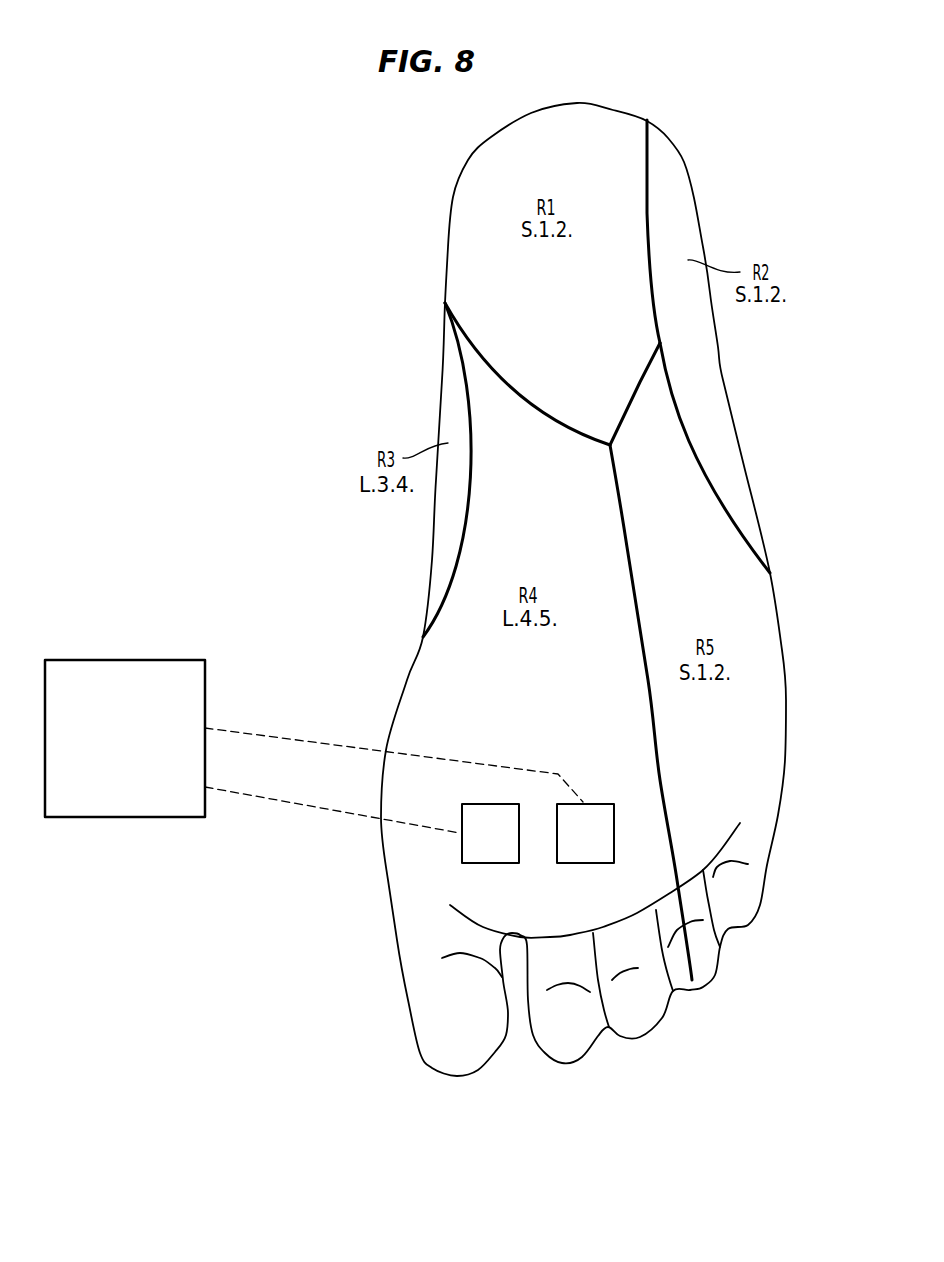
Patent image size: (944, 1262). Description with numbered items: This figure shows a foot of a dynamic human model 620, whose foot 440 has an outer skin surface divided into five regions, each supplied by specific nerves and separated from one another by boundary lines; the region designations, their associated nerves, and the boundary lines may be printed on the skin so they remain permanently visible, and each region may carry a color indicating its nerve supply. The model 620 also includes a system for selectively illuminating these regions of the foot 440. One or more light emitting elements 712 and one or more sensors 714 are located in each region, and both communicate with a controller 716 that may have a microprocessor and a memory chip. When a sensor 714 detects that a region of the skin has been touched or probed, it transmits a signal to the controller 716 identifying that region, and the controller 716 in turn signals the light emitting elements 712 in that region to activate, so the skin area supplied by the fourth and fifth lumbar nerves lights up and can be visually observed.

The foot 440 is at (473, 148).
The dynamic human model 620 is at (282, 246).
The light emitting element 712 is at (462, 850).
The sensor 714 is at (580, 863).
The controller 716 is at (112, 756).